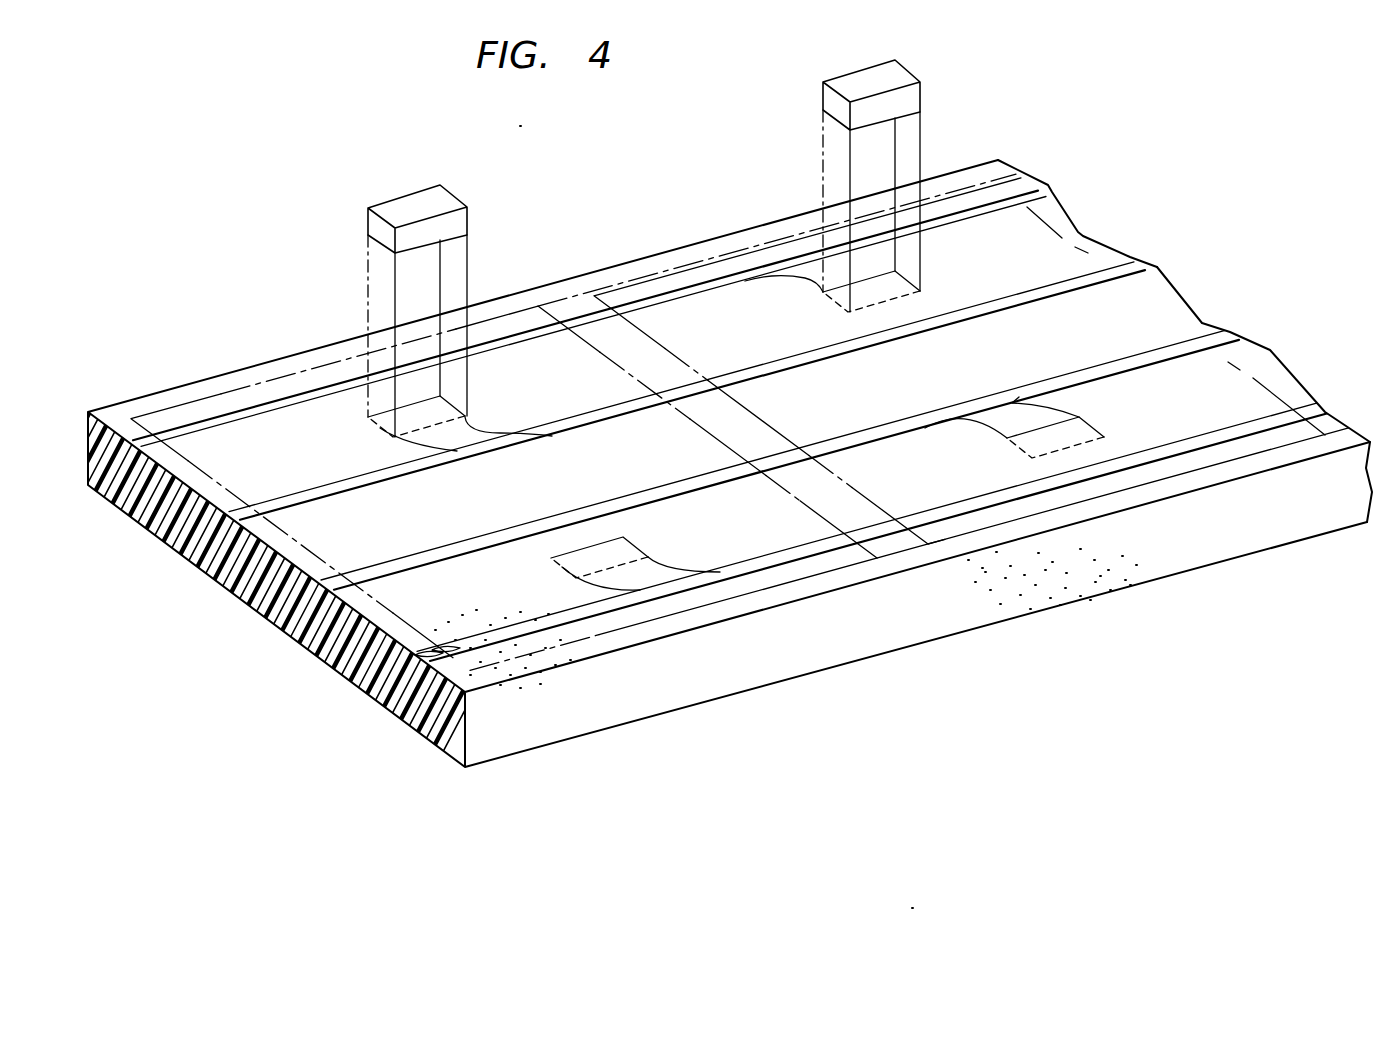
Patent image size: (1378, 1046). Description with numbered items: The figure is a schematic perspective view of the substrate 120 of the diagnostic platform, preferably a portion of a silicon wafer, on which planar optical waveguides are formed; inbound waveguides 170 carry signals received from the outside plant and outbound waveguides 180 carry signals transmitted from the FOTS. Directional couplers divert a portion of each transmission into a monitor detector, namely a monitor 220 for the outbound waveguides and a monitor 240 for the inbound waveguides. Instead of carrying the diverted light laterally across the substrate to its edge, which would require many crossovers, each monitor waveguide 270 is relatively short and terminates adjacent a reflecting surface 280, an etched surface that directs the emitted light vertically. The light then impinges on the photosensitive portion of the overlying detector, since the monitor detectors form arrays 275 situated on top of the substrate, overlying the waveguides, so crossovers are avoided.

The substrate 120 is at (915, 606).
The inbound waveguides 170 is at (1222, 338).
The outbound waveguides 180 is at (1132, 262).
The monitor 220 is at (450, 200).
The monitor 240 is at (903, 72).
The monitor waveguide 270 is at (478, 425).
The arrays 275 is at (662, 614).
The reflecting surface 280 is at (372, 433).